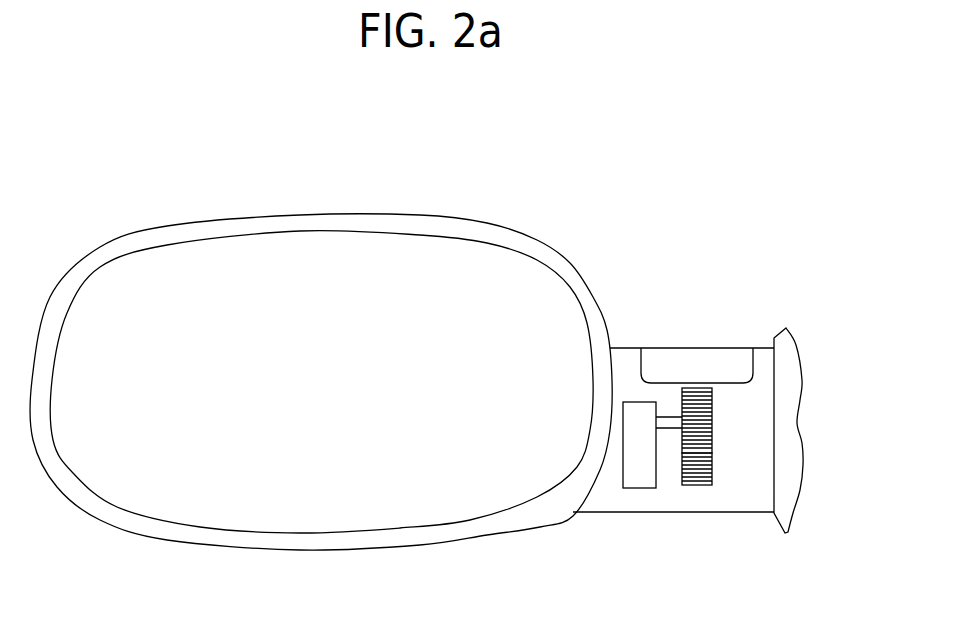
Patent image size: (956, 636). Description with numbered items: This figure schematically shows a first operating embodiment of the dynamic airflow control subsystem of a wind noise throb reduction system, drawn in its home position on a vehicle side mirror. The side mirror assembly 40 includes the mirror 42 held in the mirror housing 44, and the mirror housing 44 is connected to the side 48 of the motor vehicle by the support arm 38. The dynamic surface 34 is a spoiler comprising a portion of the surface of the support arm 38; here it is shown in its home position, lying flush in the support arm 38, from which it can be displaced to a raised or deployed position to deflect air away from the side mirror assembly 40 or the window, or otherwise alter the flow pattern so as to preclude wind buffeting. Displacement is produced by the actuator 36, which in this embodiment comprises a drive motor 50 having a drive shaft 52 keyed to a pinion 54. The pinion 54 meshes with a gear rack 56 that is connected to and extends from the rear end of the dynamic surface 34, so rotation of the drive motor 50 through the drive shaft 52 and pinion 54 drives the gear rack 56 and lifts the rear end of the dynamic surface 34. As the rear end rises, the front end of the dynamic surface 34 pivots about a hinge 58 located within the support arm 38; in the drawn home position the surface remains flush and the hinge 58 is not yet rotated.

The dynamic surface 34 is at (704, 348).
The actuator 36 is at (622, 500).
The support arm 38 is at (650, 513).
The side mirror assembly 40 is at (593, 182).
The mirror 42 is at (280, 293).
The mirror housing 44 is at (423, 213).
The side of the motor vehicle 48 is at (788, 420).
The drive motor 50 is at (637, 487).
The drive shaft 52 is at (668, 427).
The pinion 54 is at (710, 428).
The gear rack 56 is at (710, 467).
The hinge 58 is at (659, 347).